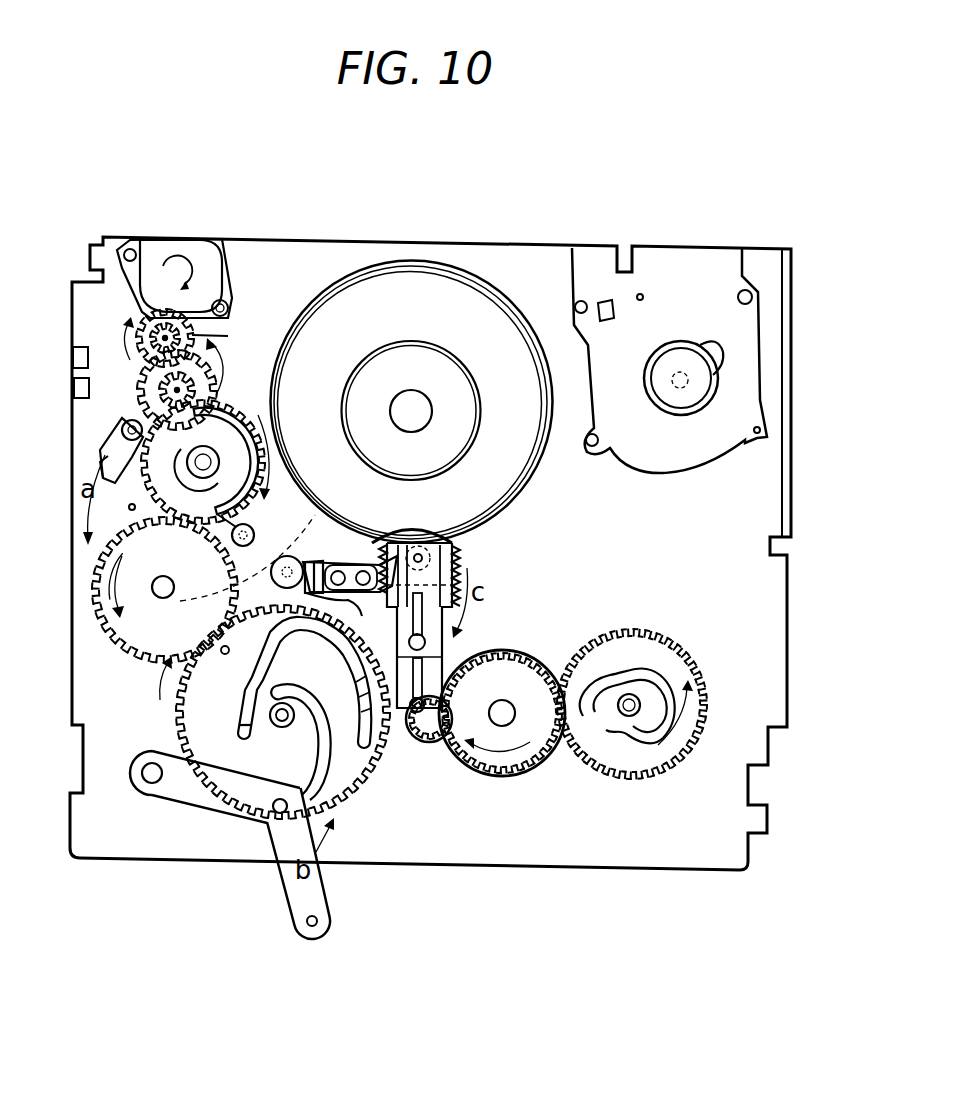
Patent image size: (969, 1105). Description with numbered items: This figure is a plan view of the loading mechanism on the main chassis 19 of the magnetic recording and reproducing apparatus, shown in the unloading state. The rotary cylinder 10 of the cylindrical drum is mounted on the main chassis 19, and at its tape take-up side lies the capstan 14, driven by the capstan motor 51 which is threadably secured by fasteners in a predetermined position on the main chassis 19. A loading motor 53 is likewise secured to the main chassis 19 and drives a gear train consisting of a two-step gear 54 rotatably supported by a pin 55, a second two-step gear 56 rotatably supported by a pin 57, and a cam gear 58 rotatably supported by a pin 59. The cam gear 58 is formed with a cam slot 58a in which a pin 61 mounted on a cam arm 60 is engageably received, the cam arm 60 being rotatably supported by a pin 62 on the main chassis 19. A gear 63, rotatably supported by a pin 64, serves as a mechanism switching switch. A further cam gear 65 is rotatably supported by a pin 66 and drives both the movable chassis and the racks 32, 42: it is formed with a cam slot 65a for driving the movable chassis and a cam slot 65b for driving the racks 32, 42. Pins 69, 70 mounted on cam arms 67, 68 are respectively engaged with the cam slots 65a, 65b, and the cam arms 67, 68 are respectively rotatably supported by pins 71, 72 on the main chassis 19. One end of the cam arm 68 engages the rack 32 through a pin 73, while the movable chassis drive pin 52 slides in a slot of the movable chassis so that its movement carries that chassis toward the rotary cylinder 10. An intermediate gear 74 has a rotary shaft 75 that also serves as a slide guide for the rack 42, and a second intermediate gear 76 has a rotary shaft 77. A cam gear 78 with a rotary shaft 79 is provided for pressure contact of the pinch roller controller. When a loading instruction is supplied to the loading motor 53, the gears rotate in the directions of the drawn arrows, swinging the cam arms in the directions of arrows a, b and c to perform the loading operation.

The rotary cylinder 10 is at (415, 290).
The capstan 14 is at (679, 372).
The main chassis 19 is at (290, 244).
The rack 32 is at (377, 542).
The rack 42 is at (444, 708).
The capstan motor 51 is at (716, 460).
The movable chassis drive pin 52 is at (317, 928).
The loading motor 53 is at (170, 242).
The two-step gear 54 is at (150, 326).
The pin 55 is at (196, 336).
The second two-step gear 56 is at (138, 388).
The pin 57 is at (140, 384).
The cam gear 58 is at (143, 477).
The cam slot 58a is at (120, 434).
The pin 59 is at (253, 483).
The cam arm 60 is at (100, 470).
The pin 61 is at (172, 500).
The pin 62 is at (310, 540).
The gear 63 is at (95, 599).
The pin 64 is at (170, 579).
The cam gear 65 is at (350, 790).
The cam slot 65a is at (300, 775).
The cam slot 65b is at (237, 710).
The pin 66 is at (277, 727).
The cam arm 67 is at (198, 798).
The cam arm 68 is at (362, 613).
The pin 69 is at (282, 814).
The pin 70 is at (360, 692).
The pin 71 is at (145, 780).
The pin 72 is at (276, 582).
The pin 73 is at (428, 556).
The intermediate gear 74 is at (407, 742).
The rotary shaft 75 is at (416, 735).
The second intermediate gear 76 is at (505, 778).
The rotary shaft 77 is at (504, 700).
The cam gear 78 is at (605, 752).
The rotary shaft 79 is at (640, 698).